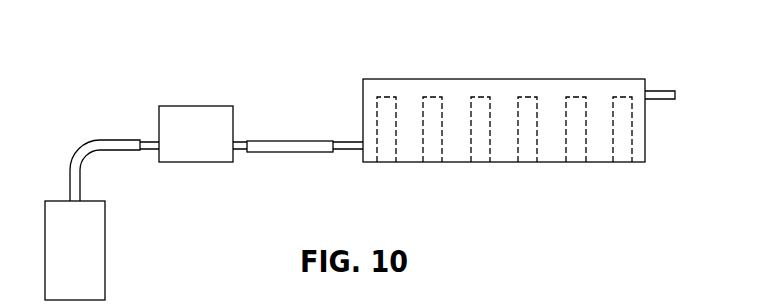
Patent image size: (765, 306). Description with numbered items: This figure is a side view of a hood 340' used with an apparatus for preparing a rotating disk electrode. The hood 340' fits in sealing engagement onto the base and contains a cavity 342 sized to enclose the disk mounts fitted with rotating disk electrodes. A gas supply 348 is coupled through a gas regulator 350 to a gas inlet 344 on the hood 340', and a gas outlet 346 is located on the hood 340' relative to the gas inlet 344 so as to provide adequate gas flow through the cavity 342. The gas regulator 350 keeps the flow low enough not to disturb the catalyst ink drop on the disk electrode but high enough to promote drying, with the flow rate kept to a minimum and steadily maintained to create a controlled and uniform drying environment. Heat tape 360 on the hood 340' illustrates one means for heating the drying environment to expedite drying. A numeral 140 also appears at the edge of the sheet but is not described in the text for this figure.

The exhaust treatment housing 340' is at (504, 81).
The solid wall segments between channels 342 is at (455, 150).
The inlet conduit / tube 344 is at (348, 152).
The outlet 346 is at (657, 89).
The supply tank 348 is at (93, 268).
The pump / control unit 350 is at (213, 146).
The channels 360 is at (573, 150).
The cut-off numeral from adjacent figure 140 is at (469, 302).